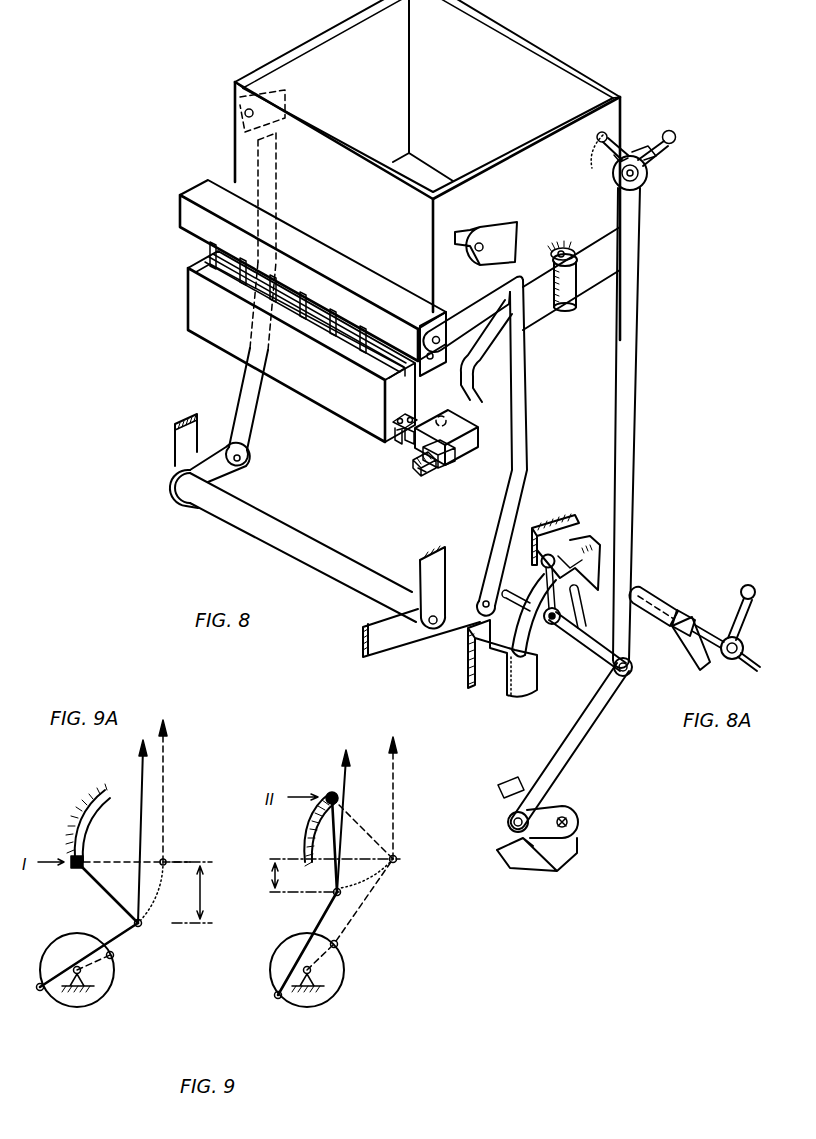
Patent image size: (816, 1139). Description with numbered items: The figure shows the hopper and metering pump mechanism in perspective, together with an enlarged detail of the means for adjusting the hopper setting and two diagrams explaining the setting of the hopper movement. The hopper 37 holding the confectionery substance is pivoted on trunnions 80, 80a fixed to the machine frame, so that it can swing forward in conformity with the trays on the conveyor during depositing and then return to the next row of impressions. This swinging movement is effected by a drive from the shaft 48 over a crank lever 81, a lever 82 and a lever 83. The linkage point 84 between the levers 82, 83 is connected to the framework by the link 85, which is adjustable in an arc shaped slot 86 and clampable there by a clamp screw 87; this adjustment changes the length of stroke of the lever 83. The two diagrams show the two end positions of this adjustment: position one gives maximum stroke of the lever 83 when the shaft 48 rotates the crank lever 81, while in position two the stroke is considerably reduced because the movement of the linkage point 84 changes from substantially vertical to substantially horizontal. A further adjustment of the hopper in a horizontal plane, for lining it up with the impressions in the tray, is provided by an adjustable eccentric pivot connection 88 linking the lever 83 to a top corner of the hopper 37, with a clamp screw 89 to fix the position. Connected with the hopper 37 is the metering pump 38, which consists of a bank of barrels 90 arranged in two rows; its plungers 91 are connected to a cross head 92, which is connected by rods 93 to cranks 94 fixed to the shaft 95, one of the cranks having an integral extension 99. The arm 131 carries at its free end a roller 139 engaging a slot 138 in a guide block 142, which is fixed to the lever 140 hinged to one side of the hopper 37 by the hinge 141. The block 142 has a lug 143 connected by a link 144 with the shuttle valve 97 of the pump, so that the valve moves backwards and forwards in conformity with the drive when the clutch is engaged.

In FIG. 8, the hopper 37 is at (263, 68).
In FIG. 8, the trunnion 80a is at (232, 118).
In FIG. 8, the cross head 92 is at (311, 243).
In FIG. 8, the plungers 91 is at (214, 245).
In FIG. 8, the metering pump 38 is at (197, 300).
In FIG. 8, the barrels 90 is at (350, 346).
In FIG. 8, the rods 93 is at (262, 400).
In FIG. 8, the cranks 94 is at (229, 476).
In FIG. 8, the shaft 95 is at (286, 529).
In FIG. 8, the extension 99 is at (392, 646).
In FIG. 8, the lever 140 is at (481, 366).
In FIG. 8, the guide block 142 is at (466, 428).
In FIG. 8, the roller 139 is at (455, 458).
In FIG. 8, the arm 131 is at (429, 471).
In FIG. 8, the link 144 is at (408, 415).
In FIG. 8, the lug 143 is at (408, 446).
In FIG. 8, the slot 138 is at (418, 472).
In FIG. 8, the shuttle valve 97 is at (400, 433).
In FIG. 8, the trunnion 80 is at (491, 237).
In FIG. 8, the hinge 141 is at (563, 255).
In FIG. 8, the eccentric pivot connection 88 is at (646, 182).
In FIG. 8, the clamp screw 89 is at (612, 148).
In FIG. 8, the lever 83 is at (629, 396).
In FIG. 9A, the lever 83 is at (143, 827).
In FIG. 9, the lever 83 is at (350, 784).
In FIG. 8, the linkage point 84 is at (628, 672).
In FIG. 9A, the linkage point 84 is at (141, 926).
In FIG. 9, the linkage point 84 is at (344, 900).
In FIG. 8, the lever 82 is at (586, 730).
In FIG. 9A, the lever 82 is at (122, 942).
In FIG. 9, the lever 82 is at (321, 916).
In FIG. 8, the crank lever 81 is at (572, 812).
In FIG. 9A, the crank lever 81 is at (60, 980).
In FIG. 9, the crank lever 81 is at (295, 988).
In FIG. 8, the shaft 48 is at (574, 827).
In FIG. 9A, the shaft 48 is at (85, 972).
In FIG. 9, the shaft 48 is at (316, 971).
In FIG. 8, the clamp screw 87 is at (561, 618).
In FIG. 8A, the clamp screw 87 is at (728, 622).
In FIG. 9A, the clamp screw 87 is at (72, 868).
In FIG. 9, the clamp screw 87 is at (330, 794).
In FIG. 8, the link 85 is at (590, 647).
In FIG. 8A, the link 85 is at (690, 653).
In FIG. 9A, the link 85 is at (105, 893).
In FIG. 9, the link 85 is at (330, 855).
In FIG. 8, the arc shaped slot 86 is at (541, 656).
In FIG. 9A, the arc shaped slot 86 is at (80, 815).
In FIG. 9, the arc shaped slot 86 is at (306, 831).